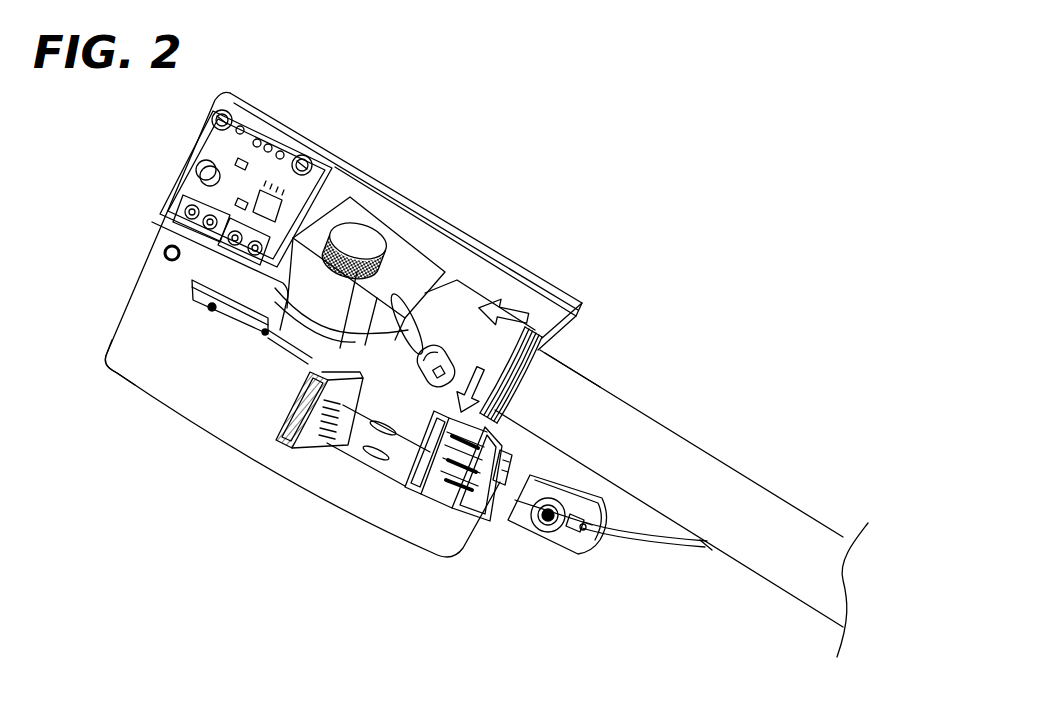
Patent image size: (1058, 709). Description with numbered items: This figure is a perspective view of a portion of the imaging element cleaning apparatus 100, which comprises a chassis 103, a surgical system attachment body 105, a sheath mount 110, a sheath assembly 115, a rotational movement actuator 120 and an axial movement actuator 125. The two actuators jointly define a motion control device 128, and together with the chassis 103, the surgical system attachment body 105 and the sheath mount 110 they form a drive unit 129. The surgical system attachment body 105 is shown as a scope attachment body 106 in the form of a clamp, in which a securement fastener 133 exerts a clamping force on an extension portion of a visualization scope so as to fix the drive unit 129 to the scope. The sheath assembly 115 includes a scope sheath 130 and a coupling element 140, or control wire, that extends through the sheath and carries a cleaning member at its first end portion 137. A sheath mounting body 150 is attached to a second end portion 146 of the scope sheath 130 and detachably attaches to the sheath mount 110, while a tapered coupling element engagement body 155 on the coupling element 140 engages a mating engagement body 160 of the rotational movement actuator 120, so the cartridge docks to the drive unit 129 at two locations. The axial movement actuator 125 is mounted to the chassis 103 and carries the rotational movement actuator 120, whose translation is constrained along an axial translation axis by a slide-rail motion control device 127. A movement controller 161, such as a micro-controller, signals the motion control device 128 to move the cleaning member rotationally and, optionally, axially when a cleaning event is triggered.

The imaging element cleaning apparatus 100 is at (570, 130).
The chassis 103 is at (192, 393).
The surgical system attachment body 105 is at (425, 256).
The scope attachment body 106 is at (393, 240).
The sheath mount 110 is at (533, 260).
The sheath assembly 115 is at (816, 526).
The rotational movement actuator 120 is at (368, 437).
The axial movement actuator 125 is at (507, 448).
The motion control device 127 is at (228, 316).
The motion control device 128 is at (394, 475).
The drive unit 129 is at (120, 370).
The scope sheath 130 is at (653, 443).
The securement fastener 133 is at (360, 238).
The first end portion 137 is at (640, 543).
The coupling element 140 is at (687, 543).
The second end portion 146 is at (580, 410).
The sheath mounting body 150 is at (540, 349).
The coupling element engagement body 155 is at (578, 554).
The mating engagement body 160 is at (543, 545).
The movement controller 161 is at (218, 140).